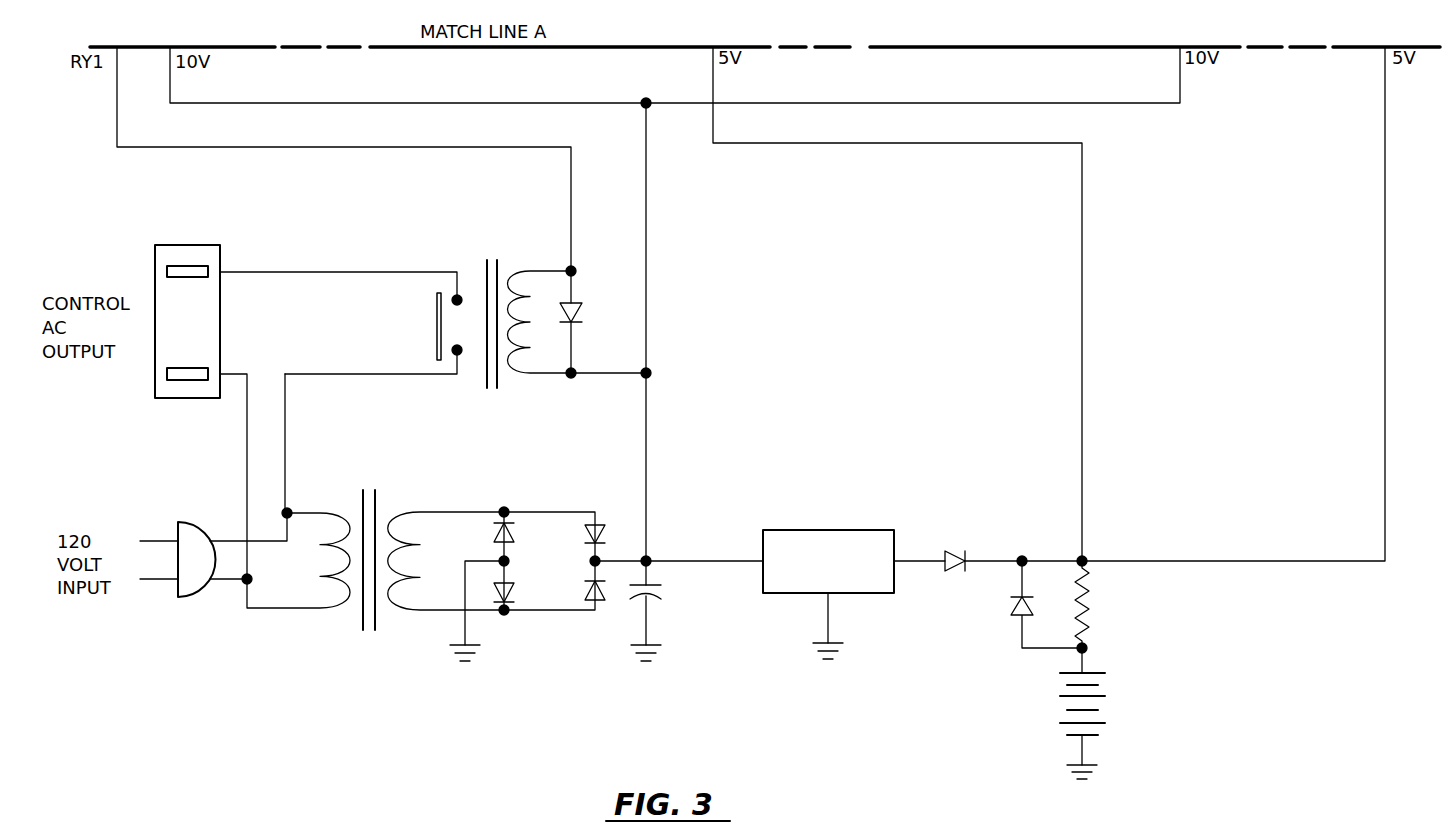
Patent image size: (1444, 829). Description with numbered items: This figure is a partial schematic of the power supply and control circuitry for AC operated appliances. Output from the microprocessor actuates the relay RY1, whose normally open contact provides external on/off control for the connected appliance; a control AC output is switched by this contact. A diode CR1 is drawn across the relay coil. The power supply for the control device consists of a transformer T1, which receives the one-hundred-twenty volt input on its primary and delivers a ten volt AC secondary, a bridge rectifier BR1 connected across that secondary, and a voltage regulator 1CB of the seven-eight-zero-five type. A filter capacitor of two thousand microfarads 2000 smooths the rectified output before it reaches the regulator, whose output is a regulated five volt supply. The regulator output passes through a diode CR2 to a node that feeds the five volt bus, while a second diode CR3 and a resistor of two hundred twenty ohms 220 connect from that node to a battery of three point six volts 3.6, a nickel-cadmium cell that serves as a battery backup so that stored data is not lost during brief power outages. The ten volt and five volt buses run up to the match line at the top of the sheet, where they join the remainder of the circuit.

The relay RY1 is at (541, 301).
The diode CR1 across relay coil CR1 is at (592, 322).
The transformer T1 is at (375, 546).
The bridge rectifier BR1 is at (560, 577).
The 2000 uf filter capacitor 2000 is at (670, 612).
The 7805 voltage regulator 1CB is at (845, 522).
The diode CR2 is at (1009, 549).
The diode CR3 is at (1022, 604).
The 220 ohm resistor 220 is at (1102, 607).
The 3.6 volt Ni-Cad battery 3.6 is at (1126, 713).